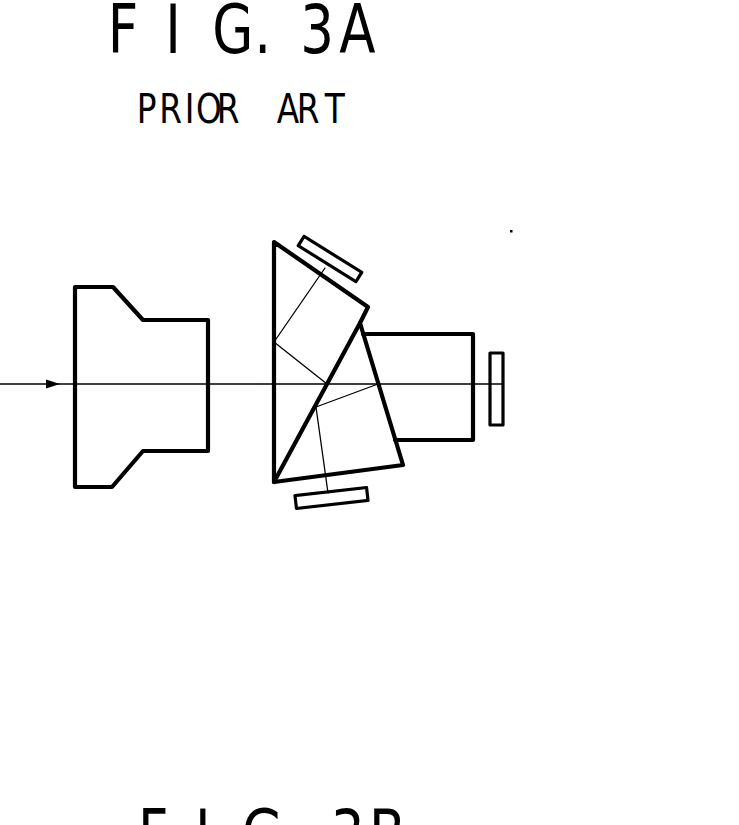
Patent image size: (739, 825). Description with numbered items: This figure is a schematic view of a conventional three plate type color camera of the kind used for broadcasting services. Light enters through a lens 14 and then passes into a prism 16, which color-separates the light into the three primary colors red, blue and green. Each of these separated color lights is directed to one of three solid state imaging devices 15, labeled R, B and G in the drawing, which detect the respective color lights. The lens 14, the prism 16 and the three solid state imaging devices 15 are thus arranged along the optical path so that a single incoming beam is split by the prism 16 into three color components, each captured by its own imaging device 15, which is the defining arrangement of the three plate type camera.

The lens 14 is at (102, 488).
The solid state imaging devices 15 is at (335, 252).
The prism 16 is at (455, 443).